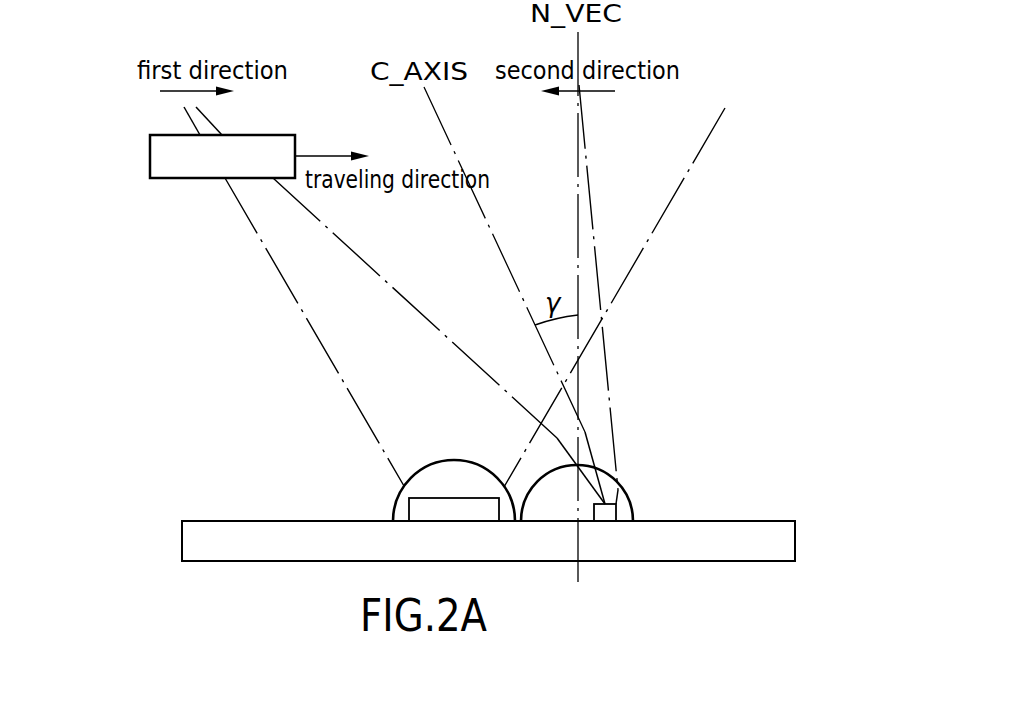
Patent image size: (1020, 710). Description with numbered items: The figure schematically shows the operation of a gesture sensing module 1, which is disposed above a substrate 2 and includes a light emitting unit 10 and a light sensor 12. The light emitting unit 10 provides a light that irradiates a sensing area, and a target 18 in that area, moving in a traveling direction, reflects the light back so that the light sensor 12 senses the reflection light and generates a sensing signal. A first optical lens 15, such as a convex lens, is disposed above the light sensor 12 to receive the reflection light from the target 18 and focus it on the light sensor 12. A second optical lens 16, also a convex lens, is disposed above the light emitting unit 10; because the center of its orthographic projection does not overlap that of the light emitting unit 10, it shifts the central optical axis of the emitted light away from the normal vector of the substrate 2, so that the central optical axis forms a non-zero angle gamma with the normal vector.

The gesture sensing module 1 is at (655, 480).
The substrate 2 is at (768, 530).
The light emitting unit 10 is at (617, 515).
The light sensor 12 is at (408, 512).
The first optical lens 15 is at (437, 462).
The second optical lens 16 is at (618, 486).
The target 18 is at (173, 179).